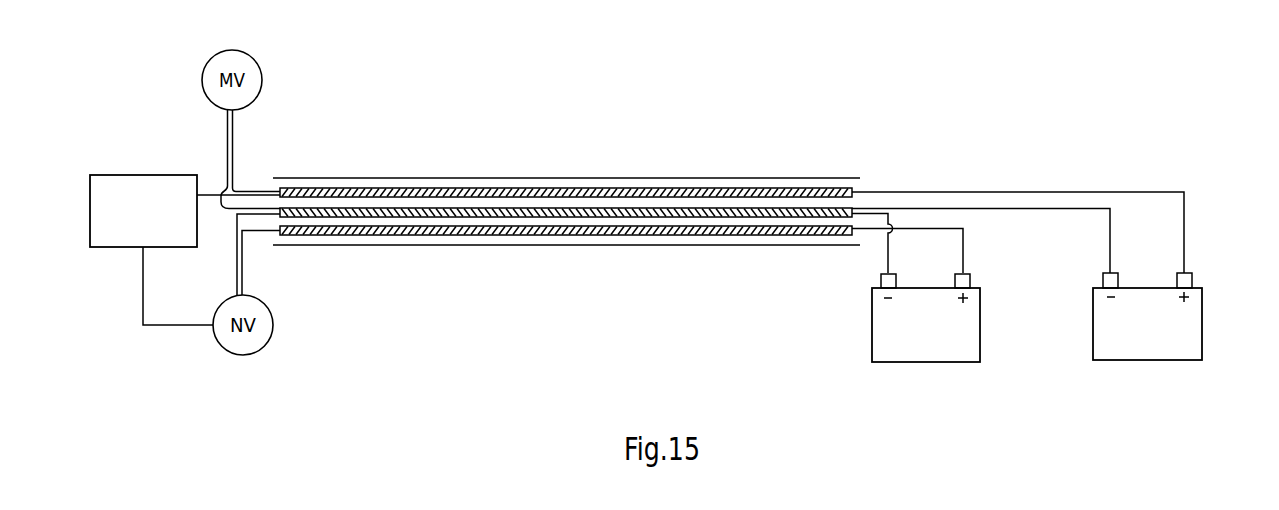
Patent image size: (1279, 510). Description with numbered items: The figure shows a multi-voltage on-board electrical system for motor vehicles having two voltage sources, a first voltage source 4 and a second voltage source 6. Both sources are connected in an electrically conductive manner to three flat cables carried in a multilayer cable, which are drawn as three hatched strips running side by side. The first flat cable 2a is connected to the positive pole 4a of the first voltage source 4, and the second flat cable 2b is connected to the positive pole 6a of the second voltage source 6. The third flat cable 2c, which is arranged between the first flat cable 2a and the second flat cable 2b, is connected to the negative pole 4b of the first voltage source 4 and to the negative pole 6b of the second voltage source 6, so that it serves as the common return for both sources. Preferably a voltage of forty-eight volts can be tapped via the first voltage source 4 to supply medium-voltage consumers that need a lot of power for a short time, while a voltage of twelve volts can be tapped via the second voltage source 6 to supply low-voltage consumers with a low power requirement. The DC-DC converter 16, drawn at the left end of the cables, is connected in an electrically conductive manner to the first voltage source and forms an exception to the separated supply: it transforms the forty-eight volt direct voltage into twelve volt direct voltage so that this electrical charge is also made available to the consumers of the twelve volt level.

The first flat cable 2a is at (675, 190).
The second flat cable 2b is at (703, 235).
The third flat cable 2c is at (748, 210).
The first voltage source 4 is at (1147, 343).
The positive pole of the first voltage source 4a is at (1193, 280).
The negative pole of the first voltage source 4b is at (1102, 280).
The second voltage source 6 is at (924, 343).
The positive pole of the second voltage source 6a is at (972, 280).
The negative pole of the second voltage source 6b is at (880, 280).
The DC-DC converter 16 is at (110, 247).